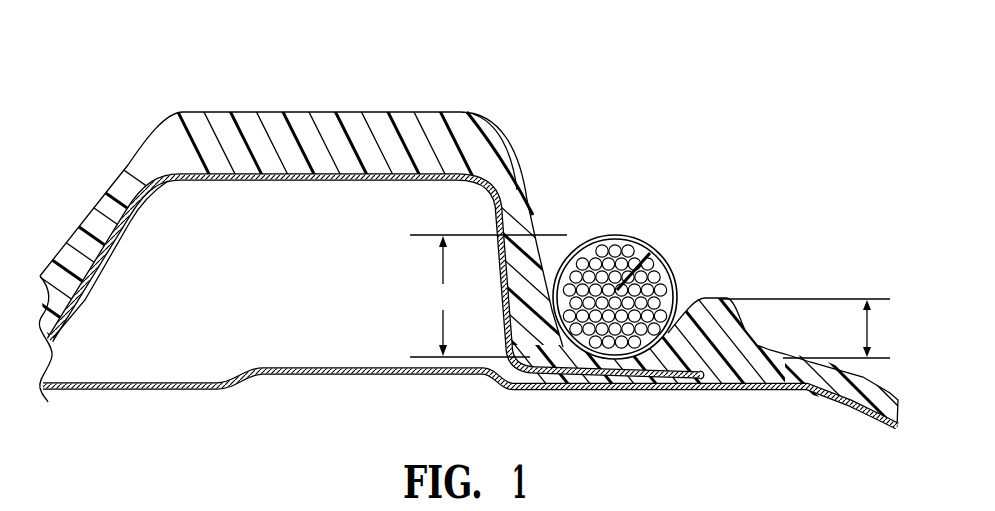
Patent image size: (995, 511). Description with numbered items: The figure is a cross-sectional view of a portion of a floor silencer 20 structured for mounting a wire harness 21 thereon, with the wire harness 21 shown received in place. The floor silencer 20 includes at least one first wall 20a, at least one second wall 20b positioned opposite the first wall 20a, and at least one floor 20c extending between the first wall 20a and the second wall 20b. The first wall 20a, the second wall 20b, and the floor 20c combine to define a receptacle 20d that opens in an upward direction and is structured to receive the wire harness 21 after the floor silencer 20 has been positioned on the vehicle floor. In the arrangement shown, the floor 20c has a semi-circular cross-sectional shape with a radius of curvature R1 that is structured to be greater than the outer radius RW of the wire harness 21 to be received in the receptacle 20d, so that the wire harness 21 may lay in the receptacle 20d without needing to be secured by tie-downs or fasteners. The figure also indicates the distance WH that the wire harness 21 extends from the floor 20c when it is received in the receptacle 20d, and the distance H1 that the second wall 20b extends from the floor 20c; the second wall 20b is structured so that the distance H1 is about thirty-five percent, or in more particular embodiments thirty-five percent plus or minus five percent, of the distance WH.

The floor silencer 20 is at (362, 108).
The first wall 20a is at (533, 215).
The second wall 20b is at (717, 299).
The floor 20c is at (629, 382).
The receptacle 20d is at (560, 356).
The wire harness 21 is at (616, 236).
The outer radius of the wire harness RW is at (655, 247).
The radius of curvature R1 is at (664, 380).
The distance that the wire harness extends from the floor WH is at (488, 296).
The distance that the second wall extends from the floor H1 is at (806, 328).